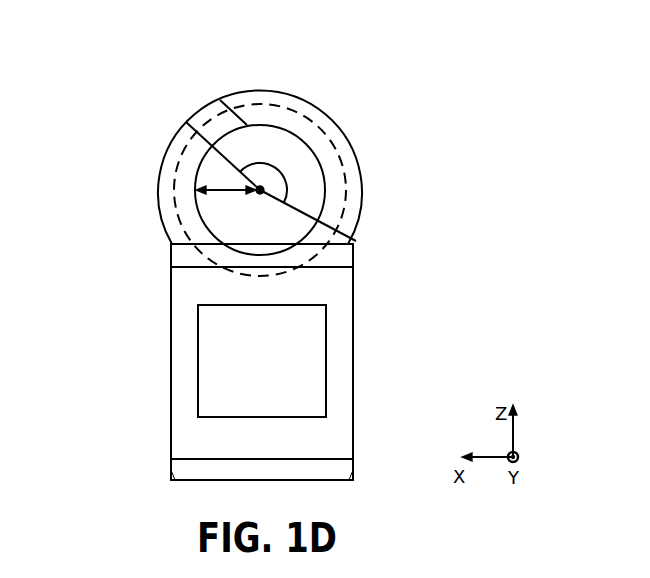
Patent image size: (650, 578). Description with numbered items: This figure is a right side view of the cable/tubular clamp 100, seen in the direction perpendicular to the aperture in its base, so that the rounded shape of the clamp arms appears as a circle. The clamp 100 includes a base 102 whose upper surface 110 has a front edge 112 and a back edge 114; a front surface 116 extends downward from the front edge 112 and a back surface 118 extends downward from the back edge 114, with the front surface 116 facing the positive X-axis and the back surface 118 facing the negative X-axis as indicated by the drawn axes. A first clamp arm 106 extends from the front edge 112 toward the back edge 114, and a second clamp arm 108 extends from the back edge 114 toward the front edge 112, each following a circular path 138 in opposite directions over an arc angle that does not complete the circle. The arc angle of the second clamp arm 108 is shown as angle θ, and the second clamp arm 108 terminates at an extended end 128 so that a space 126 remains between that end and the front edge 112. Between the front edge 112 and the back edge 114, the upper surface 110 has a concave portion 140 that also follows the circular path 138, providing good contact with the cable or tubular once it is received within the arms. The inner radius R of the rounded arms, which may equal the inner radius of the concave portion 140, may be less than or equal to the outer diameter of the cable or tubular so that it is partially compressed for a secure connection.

The cable/tubular clamp 100 is at (360, 57).
The base 102 is at (142, 353).
The first clamp arm 106 is at (200, 212).
The second clamp arm 108 is at (358, 157).
The upper surface 110 is at (170, 222).
The front edge 112 is at (170, 243).
The back edge 114 is at (356, 242).
The front surface 116 is at (170, 390).
The back surface 118 is at (353, 347).
The space 126 is at (150, 165).
The extended end 128 is at (187, 123).
The circular path 138 is at (322, 128).
The concave portion 140 is at (265, 257).